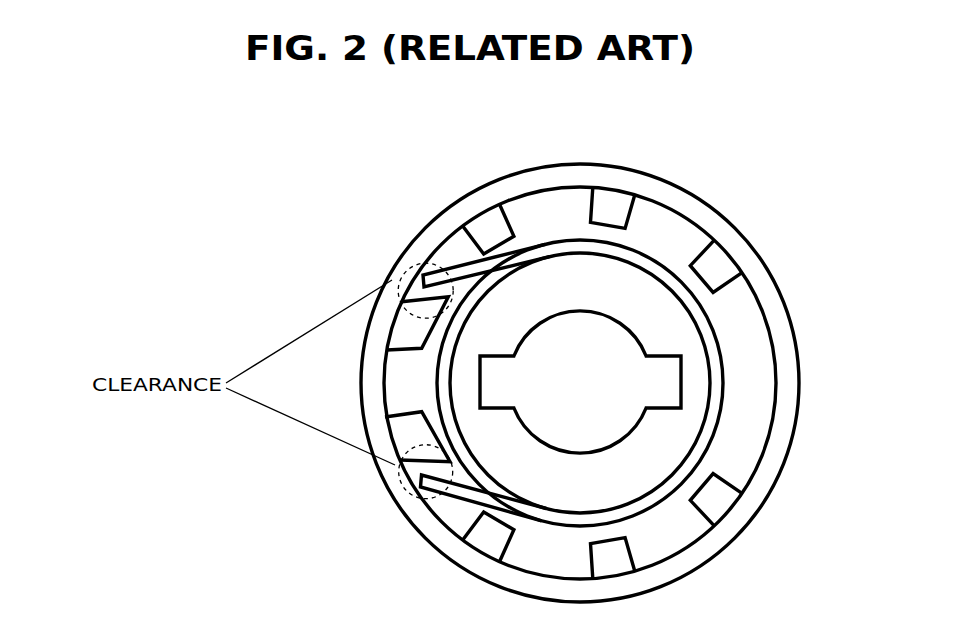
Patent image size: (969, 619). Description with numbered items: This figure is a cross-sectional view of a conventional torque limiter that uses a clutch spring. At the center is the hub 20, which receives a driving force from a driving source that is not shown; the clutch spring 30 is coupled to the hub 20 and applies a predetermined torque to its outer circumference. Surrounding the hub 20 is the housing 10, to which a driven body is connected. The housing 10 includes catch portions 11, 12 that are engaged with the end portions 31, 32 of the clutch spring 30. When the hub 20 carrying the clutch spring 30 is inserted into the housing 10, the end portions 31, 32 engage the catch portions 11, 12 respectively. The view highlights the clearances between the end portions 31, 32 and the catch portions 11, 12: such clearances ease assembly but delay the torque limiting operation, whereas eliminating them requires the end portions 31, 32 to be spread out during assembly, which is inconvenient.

The housing 10 is at (545, 172).
The catch portion 11 is at (403, 330).
The catch portion 12 is at (400, 427).
The hub 20 is at (677, 338).
The clutch spring 30 is at (656, 260).
The end portion 31 is at (468, 264).
The end portion 32 is at (437, 491).